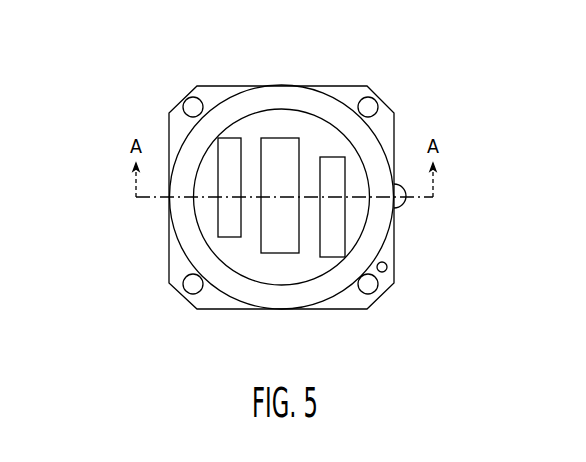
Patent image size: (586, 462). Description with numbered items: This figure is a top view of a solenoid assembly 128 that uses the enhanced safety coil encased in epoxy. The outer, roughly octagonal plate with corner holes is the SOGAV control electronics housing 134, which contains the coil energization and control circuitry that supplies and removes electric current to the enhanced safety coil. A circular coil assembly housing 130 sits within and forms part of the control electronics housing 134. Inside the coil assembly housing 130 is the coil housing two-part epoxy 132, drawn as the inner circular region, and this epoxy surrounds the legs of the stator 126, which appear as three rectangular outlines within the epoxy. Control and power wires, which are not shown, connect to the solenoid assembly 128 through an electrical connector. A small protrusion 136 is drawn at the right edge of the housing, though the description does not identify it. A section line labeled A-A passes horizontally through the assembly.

The stator 126 is at (233, 150).
The solenoid assembly 128 is at (112, 277).
The coil assembly housing 130 is at (377, 230).
The coil housing two-part epoxy 132 is at (246, 262).
The SOGAV control electronics housing 134 is at (349, 301).
The tab 136 is at (404, 205).